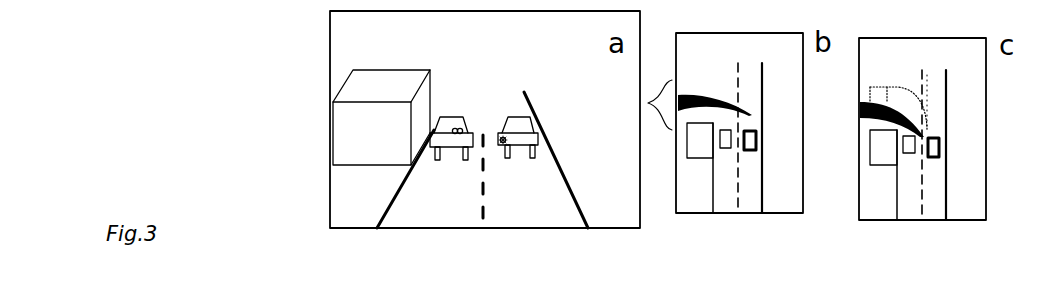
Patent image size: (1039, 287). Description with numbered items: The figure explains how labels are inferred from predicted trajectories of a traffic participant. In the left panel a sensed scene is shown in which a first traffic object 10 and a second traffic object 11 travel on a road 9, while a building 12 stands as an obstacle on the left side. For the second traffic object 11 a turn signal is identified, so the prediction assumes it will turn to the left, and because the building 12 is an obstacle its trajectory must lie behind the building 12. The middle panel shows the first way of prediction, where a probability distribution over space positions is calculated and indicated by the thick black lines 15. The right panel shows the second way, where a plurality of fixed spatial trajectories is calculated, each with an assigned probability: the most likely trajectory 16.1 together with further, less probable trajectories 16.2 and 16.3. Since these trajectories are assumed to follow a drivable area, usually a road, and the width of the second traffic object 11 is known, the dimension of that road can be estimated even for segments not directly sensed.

The road 9 is at (545, 187).
The first traffic object 10 is at (453, 139).
The second traffic object 11 is at (530, 138).
The building 12 is at (380, 80).
The thick black lines 15 is at (706, 95).
The most likely trajectory 16.1 is at (862, 120).
The 20% probability region 16.2 is at (878, 98).
The 10% probability region 16.3 is at (932, 90).